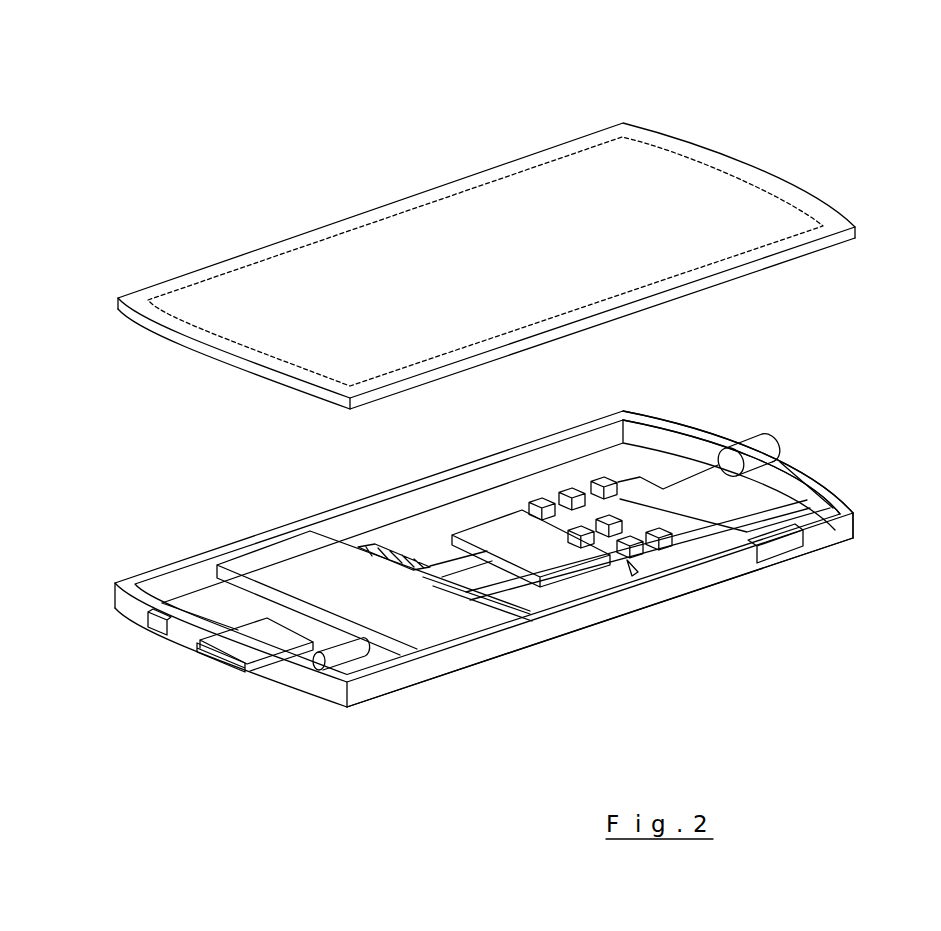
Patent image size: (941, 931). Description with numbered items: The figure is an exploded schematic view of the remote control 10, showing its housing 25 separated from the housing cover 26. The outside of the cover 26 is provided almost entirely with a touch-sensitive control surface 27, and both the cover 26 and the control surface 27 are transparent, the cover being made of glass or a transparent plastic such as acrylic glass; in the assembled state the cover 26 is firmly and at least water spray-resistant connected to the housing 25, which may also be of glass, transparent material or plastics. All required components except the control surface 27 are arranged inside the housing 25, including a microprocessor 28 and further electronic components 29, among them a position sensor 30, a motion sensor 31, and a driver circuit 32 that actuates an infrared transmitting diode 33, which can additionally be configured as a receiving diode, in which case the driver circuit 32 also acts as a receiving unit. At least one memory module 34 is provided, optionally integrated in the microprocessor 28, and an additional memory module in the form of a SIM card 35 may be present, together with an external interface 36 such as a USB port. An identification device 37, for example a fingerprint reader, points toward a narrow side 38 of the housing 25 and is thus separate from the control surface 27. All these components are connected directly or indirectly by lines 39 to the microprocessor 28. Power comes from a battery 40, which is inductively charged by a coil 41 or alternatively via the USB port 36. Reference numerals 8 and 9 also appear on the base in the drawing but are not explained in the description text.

The housing base 8 is at (380, 518).
The rim of housing 9 is at (270, 537).
The remote control 10 is at (680, 413).
The housing 25 is at (820, 478).
The housing cover 26 is at (577, 147).
The touch-sensitive control surface 27 is at (390, 267).
The microprocessor 28 is at (493, 530).
The electronic components 29 is at (627, 560).
The position sensor 30 is at (537, 496).
The motion sensor 31 is at (567, 487).
The driver circuit 32 is at (605, 480).
The infrared transmitting diode 33 is at (760, 450).
The memory module 34 is at (578, 532).
The SIM card 35 is at (205, 662).
The external interface 36 is at (143, 625).
The identification device 37 is at (780, 557).
The narrow side 38 is at (830, 532).
The lines 39 is at (527, 576).
The battery 40 is at (412, 625).
The coil 41 is at (353, 642).